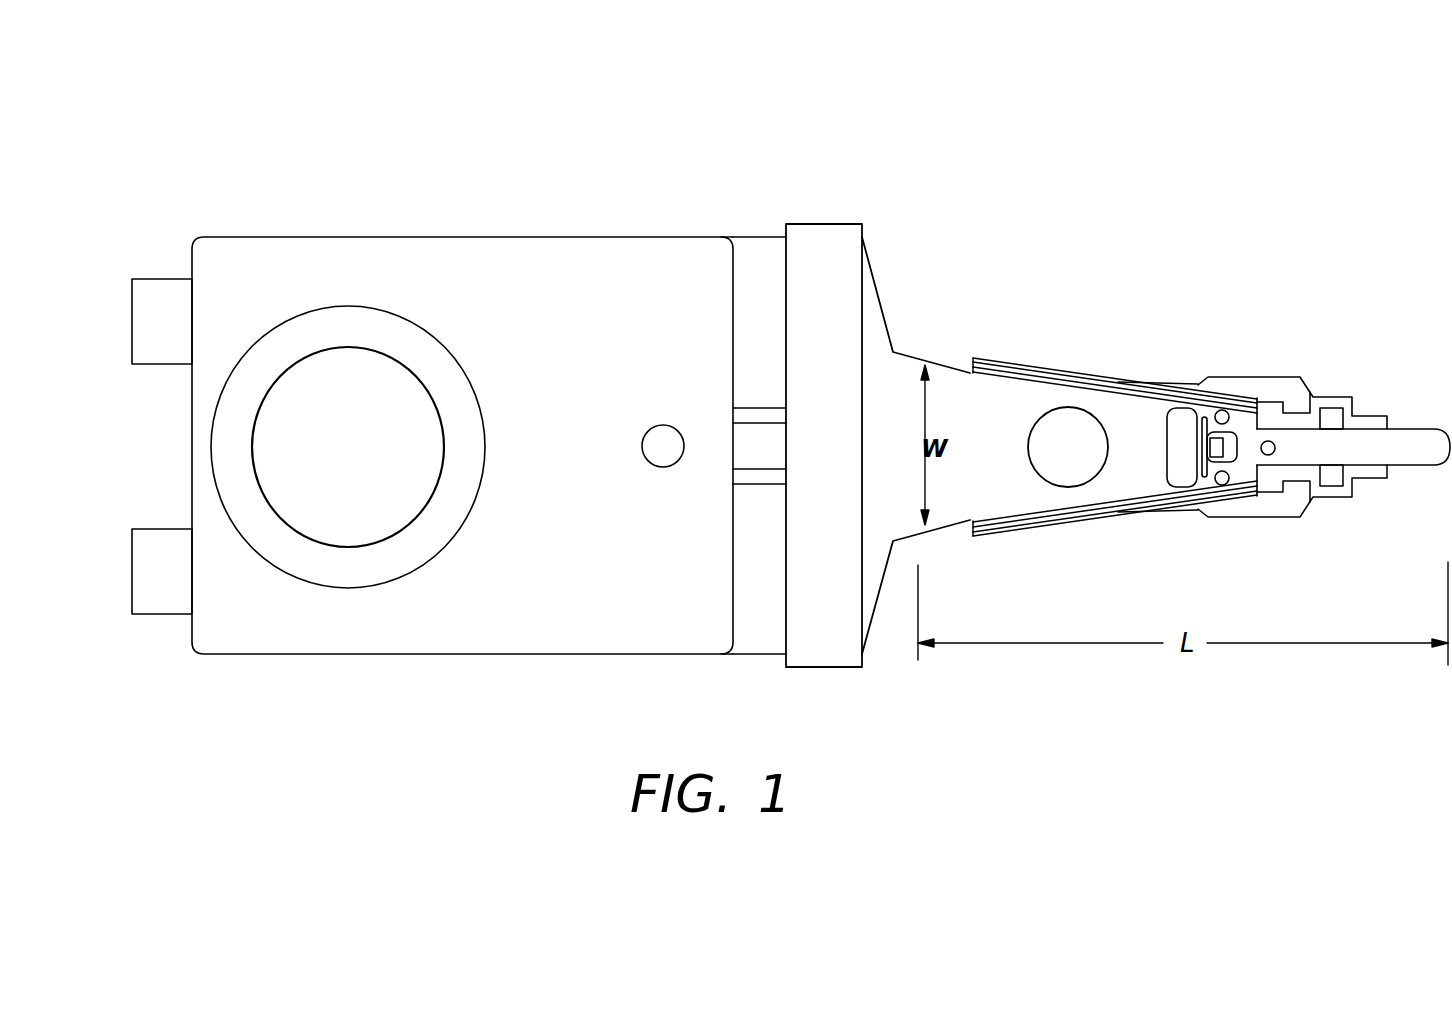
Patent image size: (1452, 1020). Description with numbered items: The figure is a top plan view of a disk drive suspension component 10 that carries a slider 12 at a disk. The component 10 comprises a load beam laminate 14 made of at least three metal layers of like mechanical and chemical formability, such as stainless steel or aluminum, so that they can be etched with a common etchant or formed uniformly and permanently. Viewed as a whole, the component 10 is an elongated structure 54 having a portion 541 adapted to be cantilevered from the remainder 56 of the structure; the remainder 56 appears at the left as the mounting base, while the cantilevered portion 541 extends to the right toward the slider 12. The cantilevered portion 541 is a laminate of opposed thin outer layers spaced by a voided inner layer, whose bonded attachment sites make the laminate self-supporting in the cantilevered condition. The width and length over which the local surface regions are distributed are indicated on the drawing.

The disk drive suspension component 10 is at (960, 233).
The slider 12 is at (1283, 402).
The load beam laminate 14 is at (1013, 338).
The elongated structure 54 is at (1146, 352).
The cantilevered portion 541 is at (1141, 529).
The remainder of the structure 56 is at (827, 223).